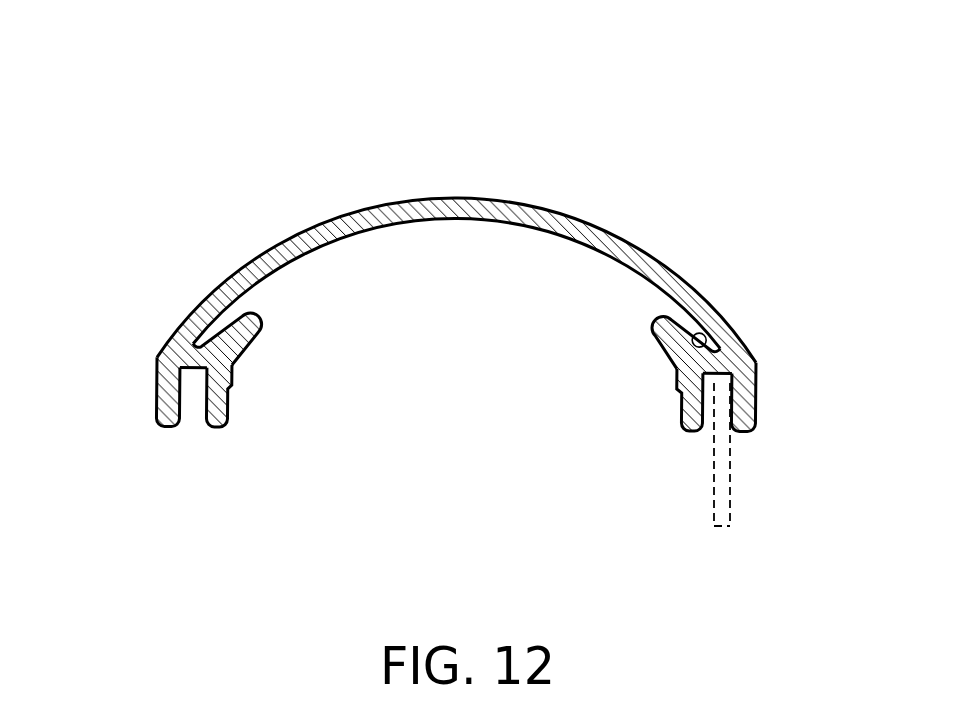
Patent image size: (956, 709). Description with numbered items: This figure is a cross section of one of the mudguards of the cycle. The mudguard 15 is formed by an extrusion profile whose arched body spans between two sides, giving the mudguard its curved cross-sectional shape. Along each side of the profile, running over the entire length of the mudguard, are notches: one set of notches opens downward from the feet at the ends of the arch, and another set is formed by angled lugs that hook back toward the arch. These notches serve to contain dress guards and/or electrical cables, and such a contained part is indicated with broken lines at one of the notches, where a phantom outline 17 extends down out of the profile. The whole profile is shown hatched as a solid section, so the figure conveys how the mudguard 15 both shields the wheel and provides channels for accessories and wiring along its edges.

The mudguard 15 is at (456, 257).
The post (phantom) 17 is at (719, 494).